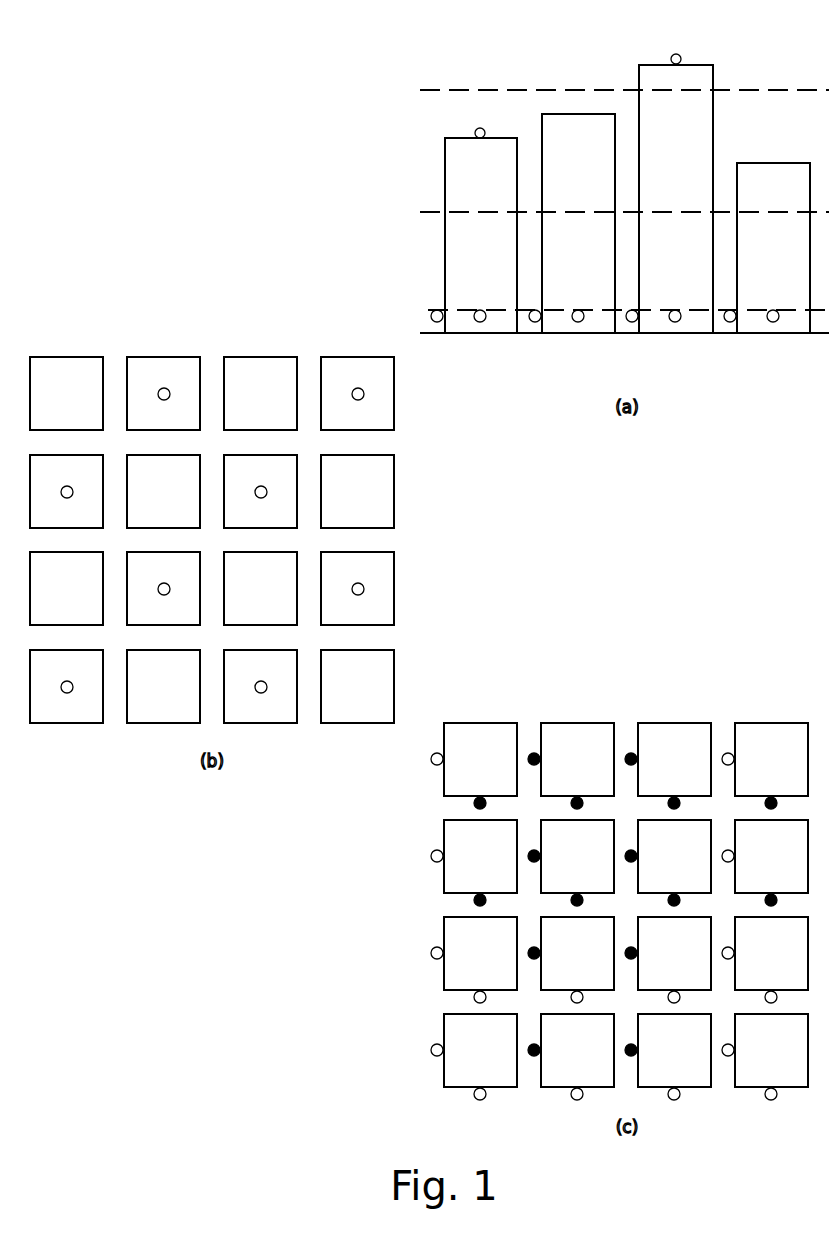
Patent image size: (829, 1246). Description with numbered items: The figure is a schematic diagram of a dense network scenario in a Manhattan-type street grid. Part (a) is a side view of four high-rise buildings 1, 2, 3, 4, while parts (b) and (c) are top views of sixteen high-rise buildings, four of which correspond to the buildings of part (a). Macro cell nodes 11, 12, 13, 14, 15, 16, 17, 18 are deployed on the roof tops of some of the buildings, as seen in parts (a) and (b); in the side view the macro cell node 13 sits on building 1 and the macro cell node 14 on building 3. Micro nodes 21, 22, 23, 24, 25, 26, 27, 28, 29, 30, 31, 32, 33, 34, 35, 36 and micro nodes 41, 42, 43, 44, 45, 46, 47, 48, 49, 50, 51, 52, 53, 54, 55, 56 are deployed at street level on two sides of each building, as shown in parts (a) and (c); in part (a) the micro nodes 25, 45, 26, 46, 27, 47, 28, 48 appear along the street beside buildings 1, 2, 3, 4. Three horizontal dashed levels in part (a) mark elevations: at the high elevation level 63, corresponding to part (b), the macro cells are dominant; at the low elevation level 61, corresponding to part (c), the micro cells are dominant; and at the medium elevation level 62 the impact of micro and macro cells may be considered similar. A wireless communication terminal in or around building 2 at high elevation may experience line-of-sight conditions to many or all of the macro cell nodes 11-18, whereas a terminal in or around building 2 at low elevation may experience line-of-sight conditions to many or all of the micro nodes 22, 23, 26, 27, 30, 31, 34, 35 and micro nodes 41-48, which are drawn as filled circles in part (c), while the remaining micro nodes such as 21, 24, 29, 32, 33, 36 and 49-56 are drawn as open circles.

The high-rise building 1 is at (481, 235).
The high-rise building 2 is at (371, 503).
The high-rise building 3 is at (676, 199).
The high-rise building 4 is at (773, 248).
The macro cell node 11 is at (158, 394).
The macro cell node 12 is at (352, 394).
The macro cell node 13 is at (475, 133).
The macro cell node 14 is at (671, 59).
The macro cell node 15 is at (158, 589).
The macro cell node 16 is at (352, 589).
The macro cell node 17 is at (61, 687).
The macro cell node 18 is at (255, 687).
The micro node 21 is at (437, 753).
The micro node 22 is at (534, 753).
The micro node 23 is at (631, 753).
The micro node 24 is at (728, 753).
The micro node 25 is at (435, 322).
The micro node 26 is at (533, 322).
The micro node 27 is at (630, 322).
The micro node 28 is at (728, 322).
The micro node 29 is at (437, 947).
The micro node 30 is at (534, 947).
The micro node 31 is at (631, 947).
The micro node 32 is at (728, 947).
The micro node 33 is at (437, 1044).
The micro node 34 is at (534, 1044).
The micro node 35 is at (631, 1044).
The micro node 36 is at (728, 1044).
The micro node 41 is at (486, 805).
The micro node 42 is at (583, 805).
The micro node 43 is at (680, 805).
The micro node 44 is at (777, 805).
The micro node 45 is at (478, 322).
The micro node 46 is at (576, 322).
The micro node 47 is at (673, 322).
The micro node 48 is at (771, 322).
The micro node 49 is at (486, 999).
The micro node 50 is at (583, 999).
The micro node 51 is at (680, 999).
The micro node 52 is at (777, 999).
The micro node 53 is at (486, 1096).
The micro node 54 is at (583, 1096).
The micro node 55 is at (680, 1096).
The micro node 56 is at (777, 1096).
The low elevation level 61 is at (428, 310).
The medium elevation level 62 is at (420, 212).
The high elevation level 63 is at (420, 90).